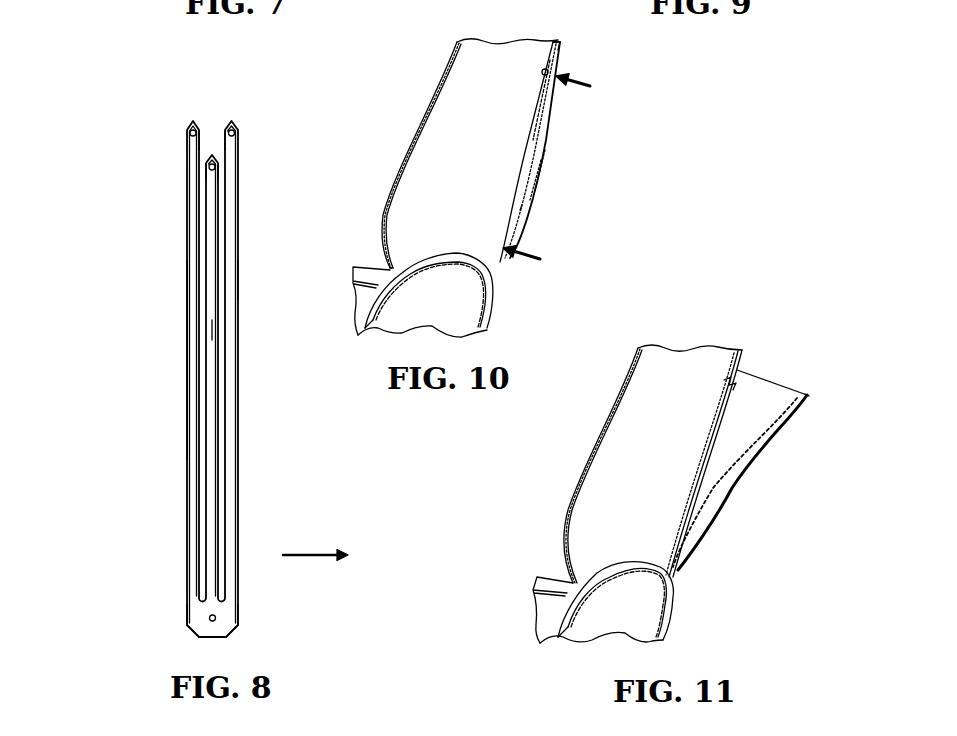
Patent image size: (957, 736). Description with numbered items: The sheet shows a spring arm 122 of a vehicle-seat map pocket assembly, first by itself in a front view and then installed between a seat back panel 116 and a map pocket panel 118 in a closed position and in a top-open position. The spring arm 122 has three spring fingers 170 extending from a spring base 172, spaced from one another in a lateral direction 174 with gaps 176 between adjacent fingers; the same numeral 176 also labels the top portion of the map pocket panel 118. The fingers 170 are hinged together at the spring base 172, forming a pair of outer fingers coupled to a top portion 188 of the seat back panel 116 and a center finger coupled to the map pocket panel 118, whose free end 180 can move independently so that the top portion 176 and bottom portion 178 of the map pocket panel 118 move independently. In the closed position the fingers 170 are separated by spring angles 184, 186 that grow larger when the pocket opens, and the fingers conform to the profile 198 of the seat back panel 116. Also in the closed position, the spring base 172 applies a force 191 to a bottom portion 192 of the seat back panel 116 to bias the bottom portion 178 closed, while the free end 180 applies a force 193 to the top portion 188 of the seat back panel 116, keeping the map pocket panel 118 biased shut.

In FIG. 10, the seat back panel 116 is at (543, 140).
In FIG. 11, the seat back panel 116 is at (742, 358).
In FIG. 10, the map pocket panel 118 is at (552, 108).
In FIG. 11, the map pocket panel 118 is at (748, 476).
In FIG. 8, the spring arm 122 is at (178, 100).
In FIG. 8, the spring fingers 170 is at (235, 275).
In FIG. 10, the spring fingers 170 is at (556, 131).
In FIG. 11, the spring fingers 170 is at (737, 397).
In FIG. 8, the spring base 172 is at (187, 608).
In FIG. 8, the lateral direction 174 is at (313, 554).
In FIG. 8, the gaps 176 is at (199, 206).
In FIG. 11, the gaps 176 is at (810, 395).
In FIG. 11, the bottom portion of map pocket panel 178 is at (697, 557).
In FIG. 10, the free end of spring finger 180 is at (542, 75).
In FIG. 10, the spring angle 184 is at (538, 182).
In FIG. 10, the spring angle 186 is at (540, 170).
In FIG. 10, the top portion of seat back panel 188 is at (557, 56).
In FIG. 10, the force 191 is at (532, 253).
In FIG. 10, the bottom portion of seat back panel 192 is at (503, 268).
In FIG. 10, the force 193 is at (580, 76).
In FIG. 10, the profile of seat back panel 198 is at (522, 206).